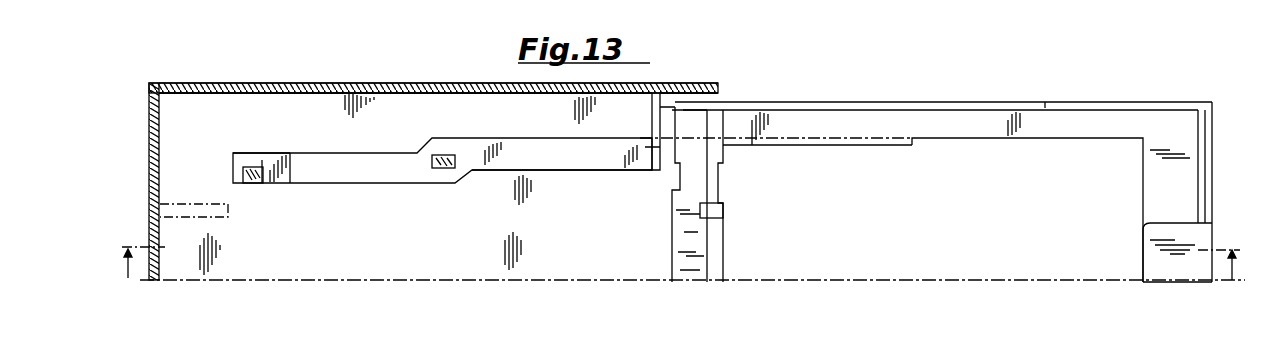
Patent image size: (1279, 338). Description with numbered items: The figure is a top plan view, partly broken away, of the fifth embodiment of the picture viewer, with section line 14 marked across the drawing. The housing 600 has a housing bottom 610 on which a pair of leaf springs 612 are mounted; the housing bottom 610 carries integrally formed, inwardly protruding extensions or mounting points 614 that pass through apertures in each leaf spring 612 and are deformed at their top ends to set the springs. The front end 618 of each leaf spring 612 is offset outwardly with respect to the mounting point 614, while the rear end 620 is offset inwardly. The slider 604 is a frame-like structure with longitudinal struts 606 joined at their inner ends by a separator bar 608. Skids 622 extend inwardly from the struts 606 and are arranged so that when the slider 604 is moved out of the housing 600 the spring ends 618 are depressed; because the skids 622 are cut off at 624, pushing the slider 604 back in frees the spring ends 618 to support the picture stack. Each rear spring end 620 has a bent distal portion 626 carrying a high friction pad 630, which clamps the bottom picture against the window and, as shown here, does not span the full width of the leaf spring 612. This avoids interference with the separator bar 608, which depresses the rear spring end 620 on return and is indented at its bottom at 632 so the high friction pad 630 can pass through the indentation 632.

The housing 600 is at (197, 84).
The housing bottom 610 is at (234, 109).
The leaf spring 612 is at (392, 190).
The mounting point 614 is at (453, 170).
The front end of leaf spring 618 is at (600, 158).
The rear end of leaf spring 620 is at (310, 178).
The distal portion 626 is at (277, 160).
The high friction pad 630 is at (253, 185).
The separator bar 608 is at (715, 245).
The indentation 632 is at (722, 178).
The slider 604 is at (873, 102).
The longitudinal strut 606 is at (978, 102).
The skid 622 is at (803, 145).
The skid cut-off 624 is at (913, 140).
The section line 14- 14 is at (678, 251).